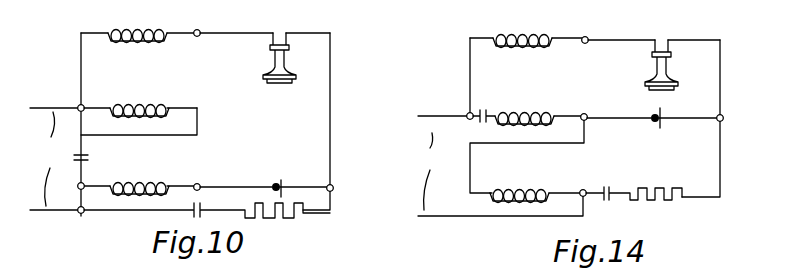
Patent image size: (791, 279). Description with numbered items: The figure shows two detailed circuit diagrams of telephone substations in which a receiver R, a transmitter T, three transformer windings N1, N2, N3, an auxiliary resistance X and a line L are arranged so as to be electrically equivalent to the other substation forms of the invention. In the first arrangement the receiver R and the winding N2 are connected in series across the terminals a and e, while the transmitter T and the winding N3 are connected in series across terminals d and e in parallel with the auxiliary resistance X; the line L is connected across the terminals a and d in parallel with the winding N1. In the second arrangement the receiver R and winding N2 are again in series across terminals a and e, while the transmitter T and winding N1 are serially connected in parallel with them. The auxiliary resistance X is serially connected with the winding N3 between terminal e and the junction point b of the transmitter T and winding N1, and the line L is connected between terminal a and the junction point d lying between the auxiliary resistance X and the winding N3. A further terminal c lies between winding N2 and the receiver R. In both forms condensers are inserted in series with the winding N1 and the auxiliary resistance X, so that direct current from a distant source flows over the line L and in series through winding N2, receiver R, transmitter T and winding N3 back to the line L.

In FIG. 10, the winding N1 is at (140, 99).
In FIG. 14, the winding N1 is at (527, 107).
In FIG. 10, the winding N2 is at (137, 23).
In FIG. 14, the winding N2 is at (526, 27).
In FIG. 10, the winding N3 is at (134, 175).
In FIG. 14, the winding N3 is at (535, 182).
In FIG. 10, the terminal a is at (76, 101).
In FIG. 14, the terminal a is at (463, 108).
In FIG. 10, the junction point b is at (195, 176).
In FIG. 14, the junction point b is at (589, 126).
In FIG. 10, the terminal c is at (196, 24).
In FIG. 14, the terminal c is at (584, 30).
In FIG. 10, the terminal d is at (77, 219).
In FIG. 14, the terminal d is at (586, 184).
In FIG. 10, the terminal e is at (335, 189).
In FIG. 14, the terminal e is at (725, 119).
In FIG. 10, the receiver R is at (265, 58).
In FIG. 14, the receiver R is at (654, 65).
In FIG. 10, the transmitter T is at (263, 177).
In FIG. 14, the transmitter T is at (652, 111).
In FIG. 10, the auxiliary resistance X is at (207, 226).
In FIG. 14, the auxiliary resistance X is at (634, 210).
In FIG. 10, the line L is at (49, 159).
In FIG. 14, the line L is at (428, 171).